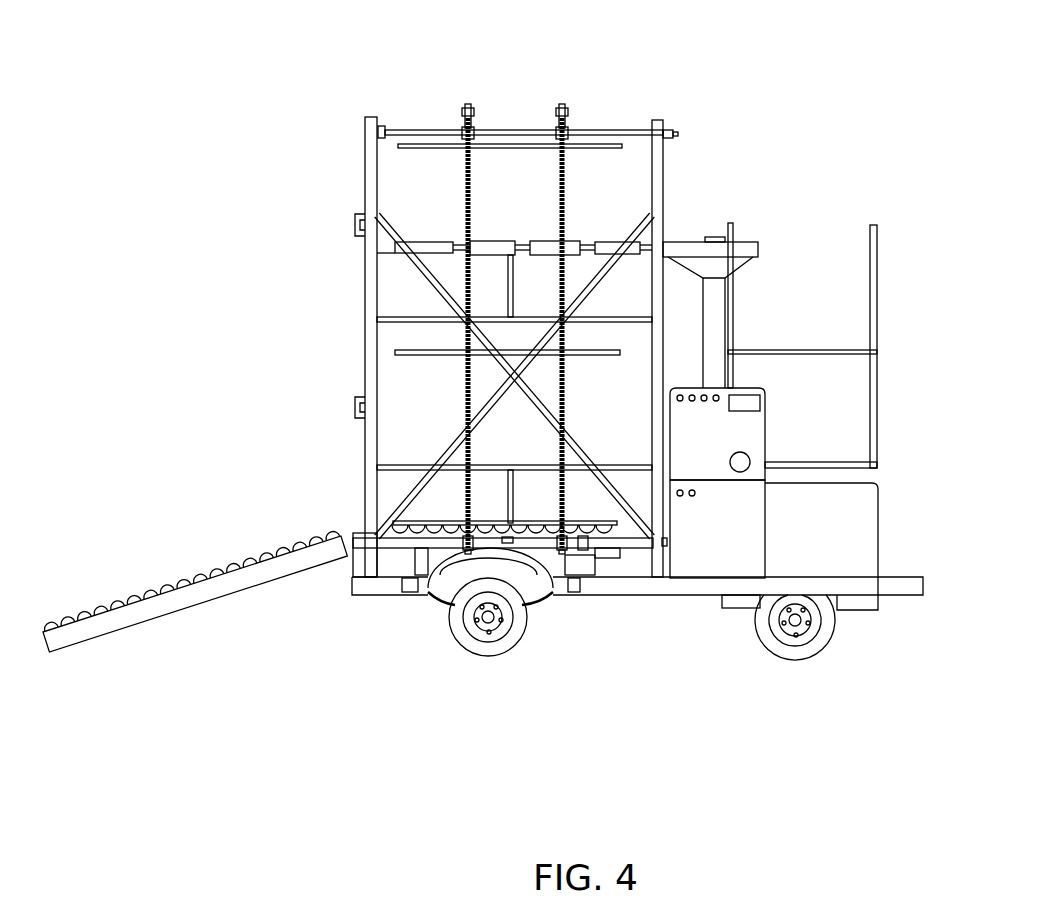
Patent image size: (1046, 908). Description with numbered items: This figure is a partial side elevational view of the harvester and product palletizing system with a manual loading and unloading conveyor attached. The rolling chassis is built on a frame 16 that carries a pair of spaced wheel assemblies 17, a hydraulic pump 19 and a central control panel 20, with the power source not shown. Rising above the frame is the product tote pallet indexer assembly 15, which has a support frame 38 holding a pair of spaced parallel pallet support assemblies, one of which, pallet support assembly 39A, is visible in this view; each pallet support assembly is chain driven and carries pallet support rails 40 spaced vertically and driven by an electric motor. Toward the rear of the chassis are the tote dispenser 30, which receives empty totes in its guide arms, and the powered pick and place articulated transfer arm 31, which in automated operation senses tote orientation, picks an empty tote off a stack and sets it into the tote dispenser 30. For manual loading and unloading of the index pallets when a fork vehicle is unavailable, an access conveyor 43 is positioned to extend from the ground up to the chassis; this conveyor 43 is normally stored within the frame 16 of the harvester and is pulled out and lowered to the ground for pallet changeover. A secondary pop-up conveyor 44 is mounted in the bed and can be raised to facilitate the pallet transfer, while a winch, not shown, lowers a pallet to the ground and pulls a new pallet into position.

The product tote pallet indexer assembly 15 is at (482, 73).
The frame 16 is at (633, 611).
The wheel assemblies 17 is at (550, 628).
The hydraulic pump 19 is at (726, 542).
The central control panel 20 is at (722, 469).
The tote dispenser 30 is at (843, 313).
The powered pick and place articulated transfer arm 31 is at (688, 223).
The support frame 38 is at (357, 173).
The pallet support assembly 39A is at (582, 109).
The pallet support rails 40 is at (420, 126).
The access conveyor 43 is at (251, 522).
The secondary pop-up conveyor 44 is at (429, 511).